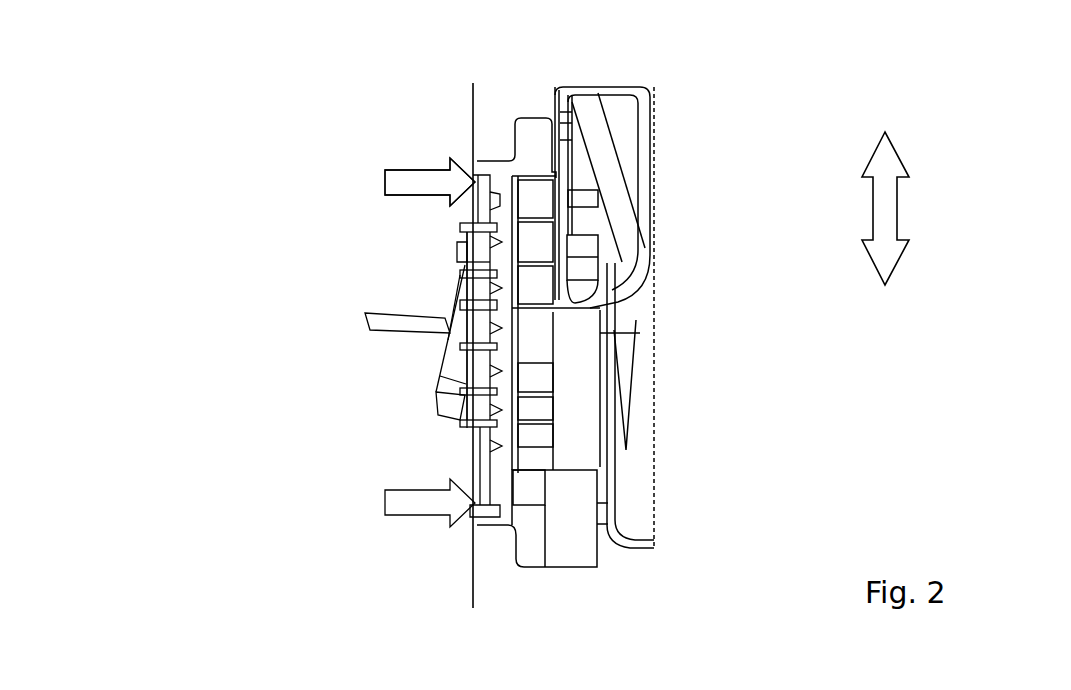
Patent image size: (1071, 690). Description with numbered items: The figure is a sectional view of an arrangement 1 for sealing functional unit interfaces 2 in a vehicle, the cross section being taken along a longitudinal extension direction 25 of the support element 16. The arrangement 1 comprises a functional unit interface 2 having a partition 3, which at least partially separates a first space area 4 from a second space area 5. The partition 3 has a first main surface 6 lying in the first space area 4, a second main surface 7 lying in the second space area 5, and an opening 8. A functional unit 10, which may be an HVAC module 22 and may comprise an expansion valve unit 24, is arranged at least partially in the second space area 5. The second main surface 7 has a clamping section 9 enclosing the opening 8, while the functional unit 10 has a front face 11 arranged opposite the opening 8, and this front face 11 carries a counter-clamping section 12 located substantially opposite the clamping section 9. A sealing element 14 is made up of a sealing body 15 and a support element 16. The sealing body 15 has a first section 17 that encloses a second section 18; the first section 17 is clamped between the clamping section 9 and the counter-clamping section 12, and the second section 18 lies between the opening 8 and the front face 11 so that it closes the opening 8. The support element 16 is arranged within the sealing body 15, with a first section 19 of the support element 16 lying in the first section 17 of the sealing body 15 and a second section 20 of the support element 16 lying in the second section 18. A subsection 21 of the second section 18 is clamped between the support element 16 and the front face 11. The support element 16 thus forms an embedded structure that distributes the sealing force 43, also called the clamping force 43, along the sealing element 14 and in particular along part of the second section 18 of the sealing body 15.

The arrangement 1 is at (158, 96).
The functional unit interface 2 is at (473, 83).
The partition 3 is at (472, 314).
The first space area 4 is at (363, 105).
The second space area 5 is at (700, 106).
The first main surface 6 is at (469, 114).
The second main surface 7 is at (479, 114).
The opening 8 is at (325, 272).
The clamping section 9 is at (473, 493).
The functional unit 10 is at (578, 160).
The front face 11 is at (500, 308).
The counter-clamping section 12 is at (518, 492).
The sealing element 14 is at (323, 346).
The sealing body 15 is at (358, 433).
The support element 16 is at (357, 280).
The first section of the sealing body 17 is at (503, 502).
The second section of the sealing body 18 is at (503, 418).
The first section of the support element 19 is at (485, 200).
The second section of the support element 20 is at (482, 330).
The subsection of the second section 21 is at (497, 338).
The HVAC module 22 is at (613, 284).
The expansion valve unit 24 is at (453, 370).
The longitudinal extension direction 25 is at (888, 175).
The sealing force 43 is at (422, 183).